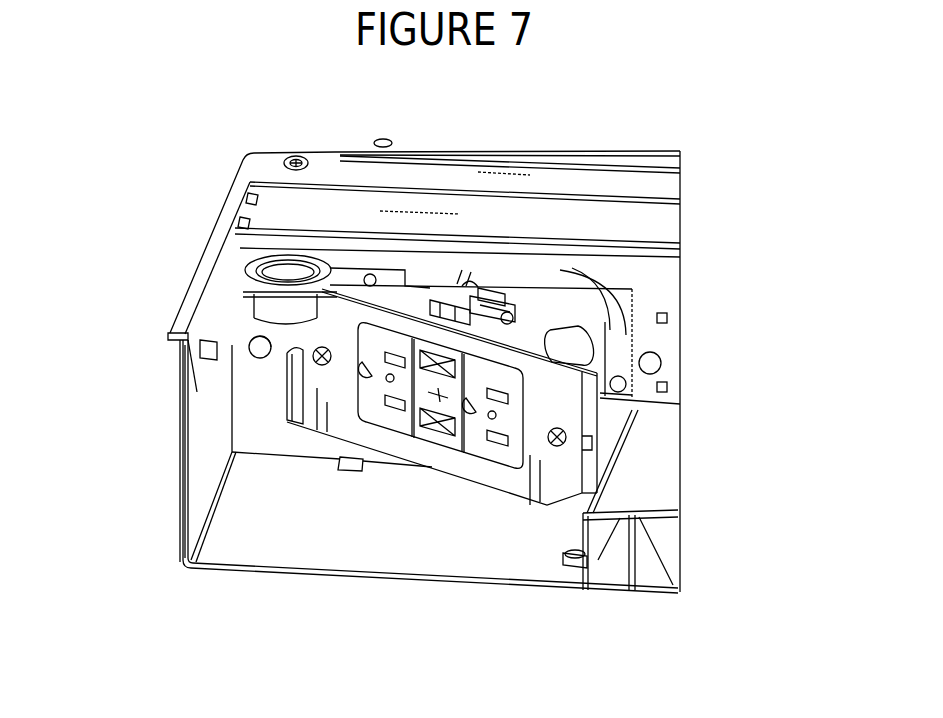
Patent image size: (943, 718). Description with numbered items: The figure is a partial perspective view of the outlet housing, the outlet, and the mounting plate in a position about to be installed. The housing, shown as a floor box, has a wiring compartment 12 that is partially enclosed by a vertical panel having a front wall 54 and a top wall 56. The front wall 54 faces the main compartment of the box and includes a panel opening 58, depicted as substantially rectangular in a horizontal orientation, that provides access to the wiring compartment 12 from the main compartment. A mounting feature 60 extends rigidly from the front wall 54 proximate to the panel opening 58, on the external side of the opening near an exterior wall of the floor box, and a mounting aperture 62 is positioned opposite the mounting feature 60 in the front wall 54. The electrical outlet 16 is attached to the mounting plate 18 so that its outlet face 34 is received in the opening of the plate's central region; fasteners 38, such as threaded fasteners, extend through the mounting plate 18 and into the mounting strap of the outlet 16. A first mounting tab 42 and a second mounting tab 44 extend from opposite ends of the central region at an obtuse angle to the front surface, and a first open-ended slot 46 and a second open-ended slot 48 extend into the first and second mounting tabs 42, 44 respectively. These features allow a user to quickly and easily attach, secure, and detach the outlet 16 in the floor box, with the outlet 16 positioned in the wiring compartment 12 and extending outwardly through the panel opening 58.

The wiring compartment 12 is at (523, 292).
The electrical outlet 16 is at (407, 337).
The mounting plate 18 is at (458, 483).
The outlet face 34 is at (478, 450).
The fasteners 38 is at (322, 347).
The first mounting tab 42 is at (293, 395).
The second mounting tab 44 is at (587, 478).
The first open-ended slot 46 is at (303, 345).
The second open-ended slot 48 is at (585, 446).
The front wall 54 is at (660, 287).
The top wall 56 is at (662, 227).
The panel opening 58 is at (563, 295).
The mounting feature 60 is at (242, 343).
The mounting aperture 62 is at (661, 363).